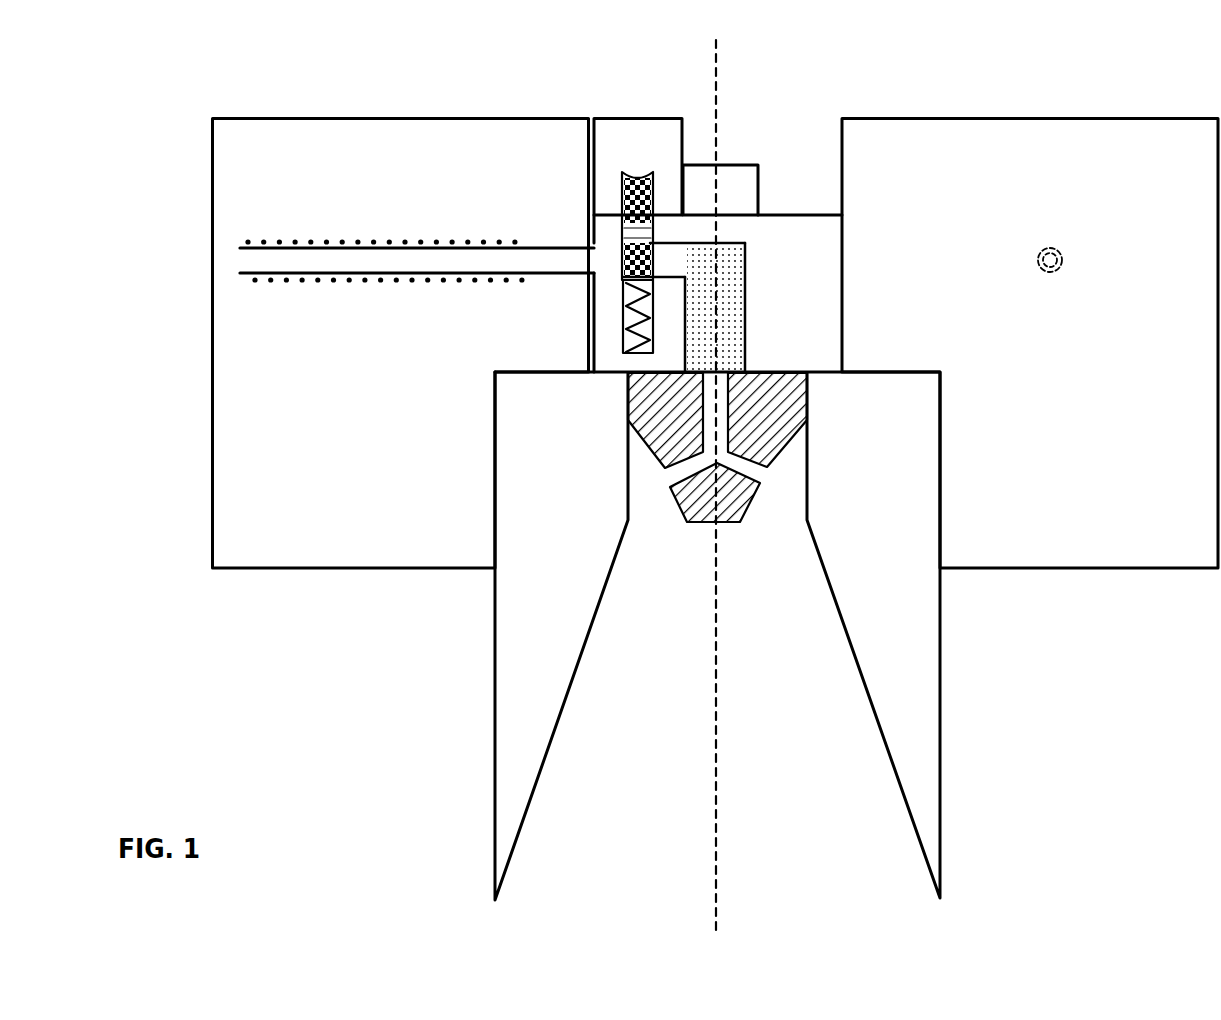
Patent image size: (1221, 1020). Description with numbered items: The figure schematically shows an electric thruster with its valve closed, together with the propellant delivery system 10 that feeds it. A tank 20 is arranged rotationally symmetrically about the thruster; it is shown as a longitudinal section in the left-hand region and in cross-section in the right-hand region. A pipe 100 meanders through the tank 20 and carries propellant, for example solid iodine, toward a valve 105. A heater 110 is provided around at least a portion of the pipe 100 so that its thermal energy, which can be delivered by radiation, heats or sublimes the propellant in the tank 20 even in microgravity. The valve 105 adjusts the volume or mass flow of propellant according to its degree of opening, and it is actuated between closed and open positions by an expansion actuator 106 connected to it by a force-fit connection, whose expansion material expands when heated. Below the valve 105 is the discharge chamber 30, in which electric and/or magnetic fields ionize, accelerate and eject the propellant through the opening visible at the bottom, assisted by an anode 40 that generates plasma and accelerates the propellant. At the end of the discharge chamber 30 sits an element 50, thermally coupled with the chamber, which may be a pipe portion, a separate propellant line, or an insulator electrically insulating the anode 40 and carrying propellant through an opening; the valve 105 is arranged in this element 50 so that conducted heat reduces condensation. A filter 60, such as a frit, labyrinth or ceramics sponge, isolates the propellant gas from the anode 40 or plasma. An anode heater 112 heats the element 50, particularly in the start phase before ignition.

The propellant delivery system 10 is at (387, 222).
The tank 20 is at (295, 542).
The discharge chamber 30 is at (522, 697).
The anode 40 is at (740, 523).
The element 50 is at (828, 290).
The filter 60 is at (735, 257).
The pipe 100 is at (260, 263).
The valve 105 is at (622, 192).
The expansion actuator 106 is at (640, 150).
The heater 110 is at (297, 243).
The anode heater 112 is at (732, 177).